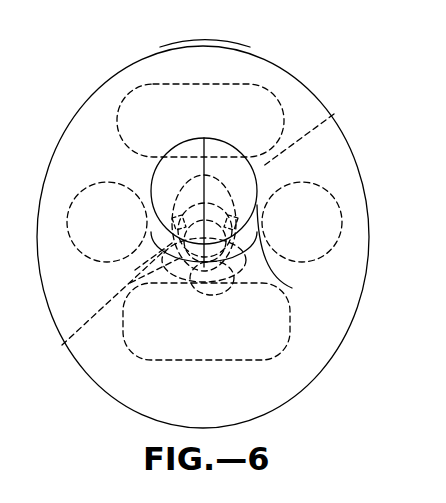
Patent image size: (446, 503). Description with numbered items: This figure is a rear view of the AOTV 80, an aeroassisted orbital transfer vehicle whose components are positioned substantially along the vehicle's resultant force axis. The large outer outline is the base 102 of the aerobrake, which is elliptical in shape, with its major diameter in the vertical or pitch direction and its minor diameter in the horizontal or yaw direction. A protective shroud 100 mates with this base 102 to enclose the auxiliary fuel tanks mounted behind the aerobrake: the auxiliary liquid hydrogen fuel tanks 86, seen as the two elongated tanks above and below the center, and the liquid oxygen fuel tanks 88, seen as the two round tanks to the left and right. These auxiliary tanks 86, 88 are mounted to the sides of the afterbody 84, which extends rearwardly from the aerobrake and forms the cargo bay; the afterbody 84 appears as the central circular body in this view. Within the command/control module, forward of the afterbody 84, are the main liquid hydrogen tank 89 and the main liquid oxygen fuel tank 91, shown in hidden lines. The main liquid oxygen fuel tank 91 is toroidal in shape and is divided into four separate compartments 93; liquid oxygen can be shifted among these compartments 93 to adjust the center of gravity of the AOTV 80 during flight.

The AOTV 80 is at (80, 64).
The afterbody 84 is at (292, 288).
The auxiliary liquid hydrogen fuel tanks 86 is at (139, 97).
The liquid oxygen fuel tanks 88 is at (68, 232).
The main liquid hydrogen tank 89 is at (334, 113).
The main liquid oxygen fuel tank 91 is at (62, 345).
The compartments 93 is at (203, 175).
The protective shroud 100 is at (52, 312).
The base 102 is at (192, 46).